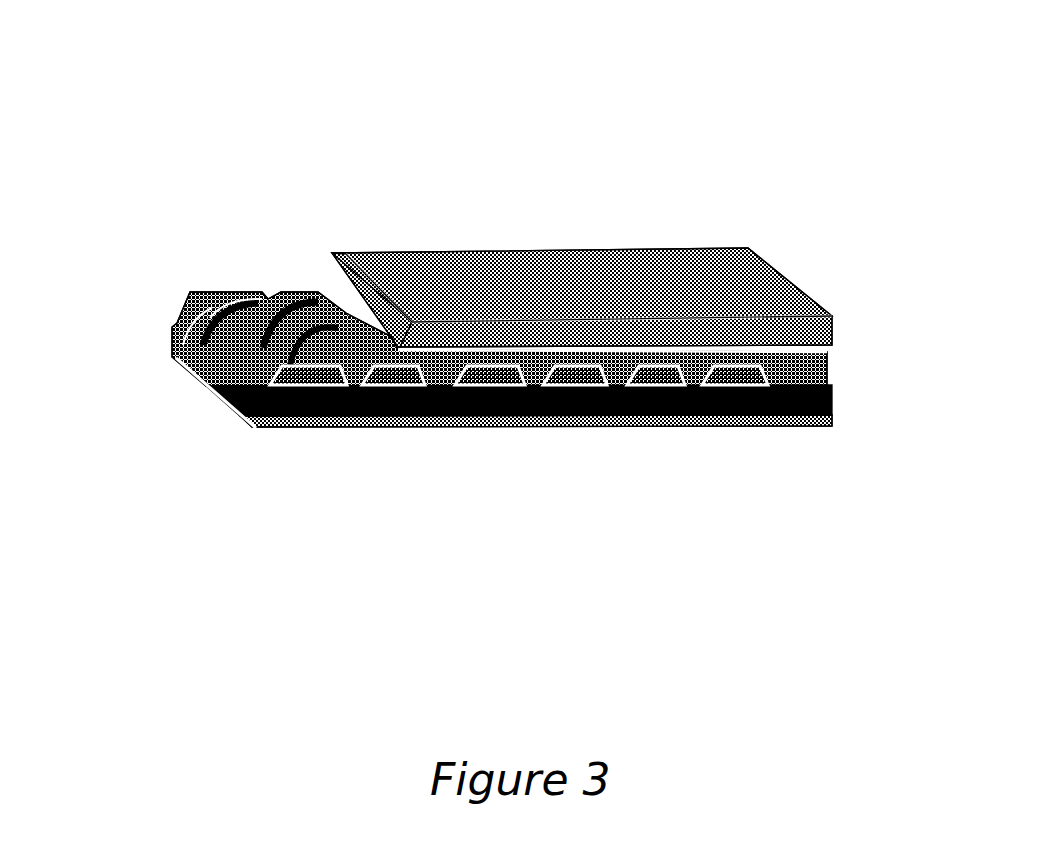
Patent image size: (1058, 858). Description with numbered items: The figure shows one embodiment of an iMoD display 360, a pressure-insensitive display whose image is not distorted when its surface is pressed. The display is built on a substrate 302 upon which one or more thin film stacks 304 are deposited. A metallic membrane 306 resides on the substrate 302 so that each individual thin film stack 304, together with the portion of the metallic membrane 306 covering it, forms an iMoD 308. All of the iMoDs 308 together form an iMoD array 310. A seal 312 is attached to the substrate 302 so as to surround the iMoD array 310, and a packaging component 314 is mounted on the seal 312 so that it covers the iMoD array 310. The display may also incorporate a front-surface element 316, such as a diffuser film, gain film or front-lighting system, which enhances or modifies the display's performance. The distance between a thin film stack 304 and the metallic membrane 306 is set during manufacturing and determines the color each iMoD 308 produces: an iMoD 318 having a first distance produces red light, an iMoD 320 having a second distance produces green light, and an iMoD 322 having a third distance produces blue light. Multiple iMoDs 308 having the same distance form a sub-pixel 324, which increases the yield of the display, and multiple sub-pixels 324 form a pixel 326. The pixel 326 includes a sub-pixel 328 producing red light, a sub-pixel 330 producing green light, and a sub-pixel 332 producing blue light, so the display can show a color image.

The stacked device assembly 360 is at (220, 127).
The substrate 302 is at (835, 397).
The thin film stack 304 is at (310, 430).
The metallic membrane 306 is at (233, 290).
The iMoD 308 is at (200, 387).
The iMoD array 310 is at (174, 304).
The seal 312 is at (835, 362).
The packaging component 314 is at (835, 328).
The front-surface element 316 is at (835, 421).
The iMoD 318 is at (348, 420).
The iMoD 320 is at (532, 420).
The iMoD 322 is at (693, 420).
The sub-pixel 324 is at (443, 620).
The pixel 326 is at (270, 602).
The sub-pixel 328 is at (427, 213).
The sub-pixel 330 is at (443, 602).
The sub-pixel 332 is at (627, 221).